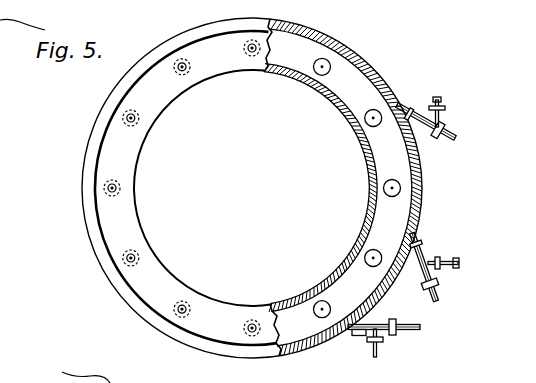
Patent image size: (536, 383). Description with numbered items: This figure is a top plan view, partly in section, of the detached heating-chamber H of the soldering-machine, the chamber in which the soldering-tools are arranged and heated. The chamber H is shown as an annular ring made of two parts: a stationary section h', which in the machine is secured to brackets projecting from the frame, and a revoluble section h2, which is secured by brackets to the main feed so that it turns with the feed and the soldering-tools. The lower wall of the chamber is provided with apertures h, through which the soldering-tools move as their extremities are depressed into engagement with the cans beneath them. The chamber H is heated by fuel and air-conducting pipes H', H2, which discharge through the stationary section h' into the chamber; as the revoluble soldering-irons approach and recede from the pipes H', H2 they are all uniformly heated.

The heating-chamber H is at (252, 179).
The apertures h is at (357, 187).
The stationary section h' is at (251, 188).
The revoluble section h2 is at (368, 193).
The fuel and air-conducting pipe H' is at (424, 230).
The fuel and air-conducting pipe H2 is at (452, 141).